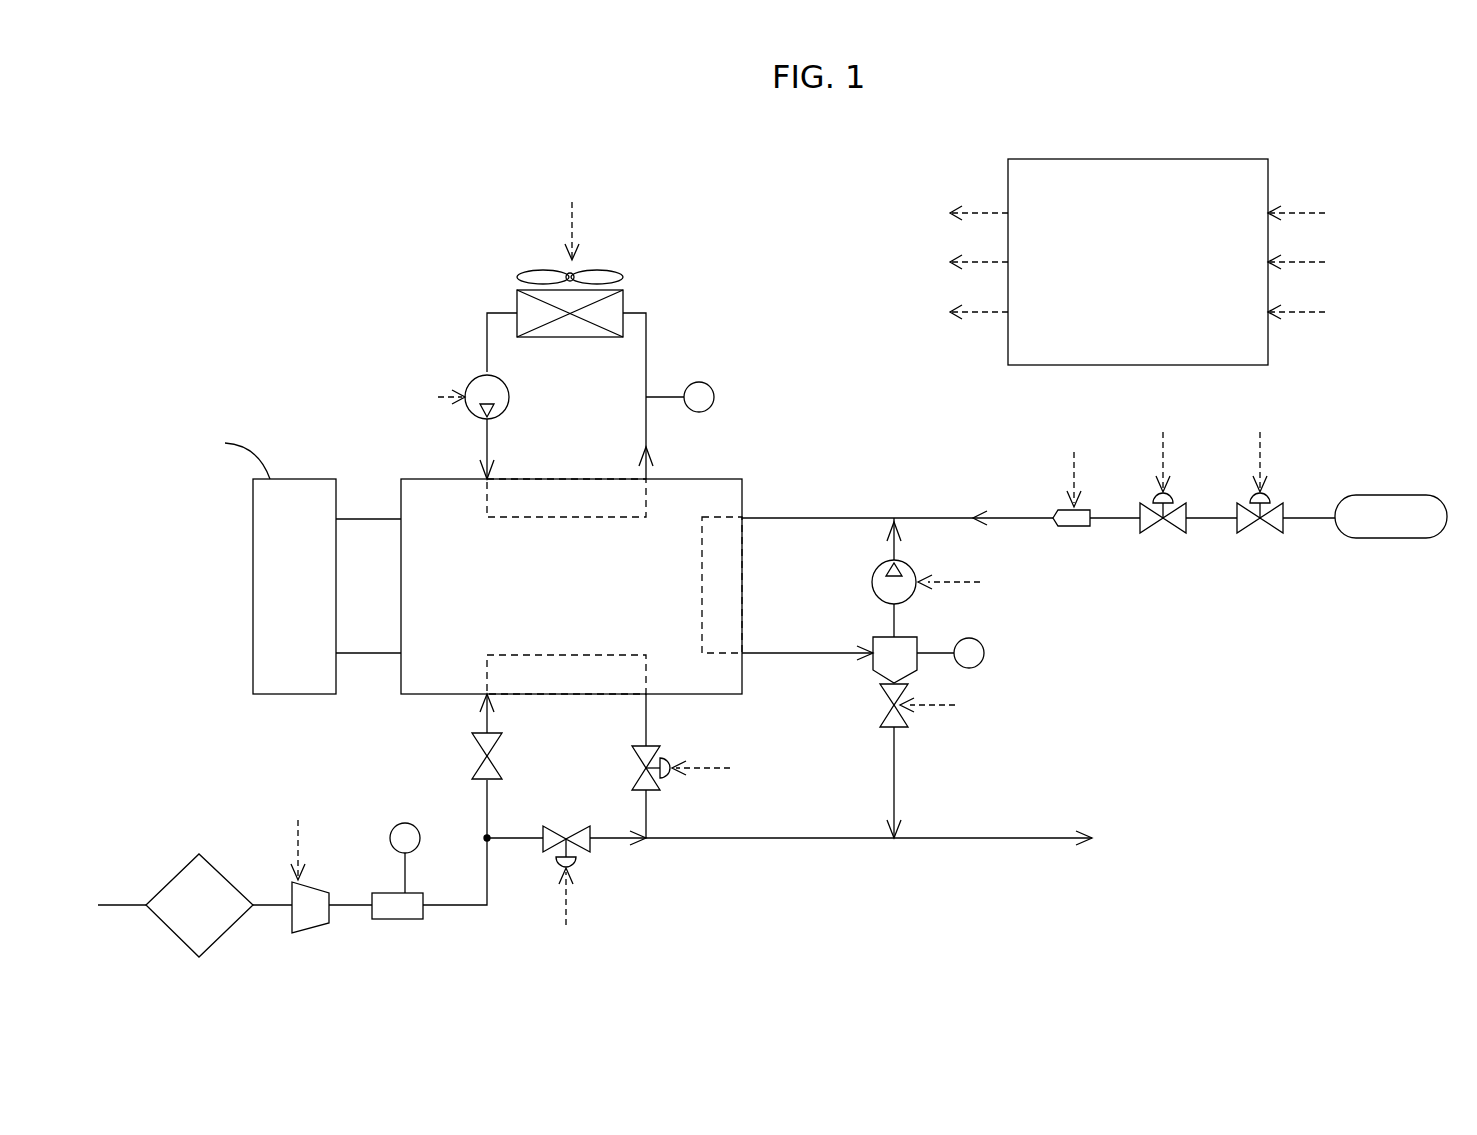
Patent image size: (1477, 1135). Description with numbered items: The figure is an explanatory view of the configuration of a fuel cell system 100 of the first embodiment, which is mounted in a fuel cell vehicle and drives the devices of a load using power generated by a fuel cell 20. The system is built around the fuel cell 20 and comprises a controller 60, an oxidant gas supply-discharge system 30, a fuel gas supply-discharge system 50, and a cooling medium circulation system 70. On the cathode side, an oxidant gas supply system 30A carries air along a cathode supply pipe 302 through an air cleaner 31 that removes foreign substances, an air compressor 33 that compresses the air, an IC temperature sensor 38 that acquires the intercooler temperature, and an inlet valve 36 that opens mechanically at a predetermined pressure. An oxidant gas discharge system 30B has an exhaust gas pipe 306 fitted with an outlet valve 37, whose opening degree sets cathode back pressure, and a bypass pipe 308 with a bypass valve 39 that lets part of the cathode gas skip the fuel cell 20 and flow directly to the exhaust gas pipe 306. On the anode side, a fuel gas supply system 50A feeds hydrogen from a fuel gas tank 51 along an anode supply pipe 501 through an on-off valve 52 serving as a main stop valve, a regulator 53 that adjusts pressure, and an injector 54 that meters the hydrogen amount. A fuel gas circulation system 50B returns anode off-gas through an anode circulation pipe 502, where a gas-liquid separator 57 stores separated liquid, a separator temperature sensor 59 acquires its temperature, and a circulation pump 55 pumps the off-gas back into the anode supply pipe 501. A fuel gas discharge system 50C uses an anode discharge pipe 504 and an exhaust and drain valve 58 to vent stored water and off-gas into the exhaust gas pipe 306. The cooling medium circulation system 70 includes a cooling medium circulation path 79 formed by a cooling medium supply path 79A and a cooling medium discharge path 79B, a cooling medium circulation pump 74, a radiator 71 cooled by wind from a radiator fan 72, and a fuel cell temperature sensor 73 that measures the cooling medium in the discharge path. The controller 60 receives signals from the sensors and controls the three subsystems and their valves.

The fuel cell system 100 is at (208, 161).
The fuel cell 20 is at (400, 502).
The oxidant gas supply-discharge system 30 is at (168, 610).
The oxidant gas supply system 30A is at (186, 750).
The oxidant gas discharge system 30B is at (702, 889).
The air cleaner 31 is at (182, 863).
The air compressor 33 is at (308, 882).
The inlet valve 36 is at (472, 748).
The outlet valve 37 is at (633, 760).
The IC temperature sensor 38 is at (397, 826).
The bypass valve 39 is at (403, 920).
The cathode supply pipe 302 is at (462, 908).
The exhaust gas pipe 306 is at (758, 838).
The bypass pipe 308 is at (614, 843).
The fuel gas supply-discharge system 50 is at (1405, 421).
The fuel gas supply system 50A is at (1216, 612).
The fuel gas circulation system 50B is at (848, 578).
The fuel gas discharge system 50C is at (1016, 717).
The fuel gas tank 51 is at (1388, 494).
The on-off valve 52 is at (1267, 531).
The regulator 53 is at (1170, 531).
The injector 54 is at (1070, 528).
The circulation pump 55 is at (910, 603).
The gas-liquid separator 57 is at (876, 672).
The exhaust and drain valve 58 is at (910, 722).
The separator temperature sensor 59 is at (968, 667).
The anode supply pipe 501 is at (1017, 513).
The anode circulation pipe 502 is at (893, 620).
The anode discharge pipe 504 is at (893, 783).
The controller 60 is at (1192, 159).
The cooling medium circulation system 70 is at (428, 271).
The radiator 71 is at (622, 294).
The radiator fan 72 is at (532, 270).
The fuel cell temperature sensor 73 is at (698, 382).
The cooling medium circulation pump 74 is at (510, 397).
The cooling medium circulation path 79 is at (657, 361).
The cooling medium supply path 79A is at (487, 338).
The cooling medium discharge path 79B is at (647, 432).